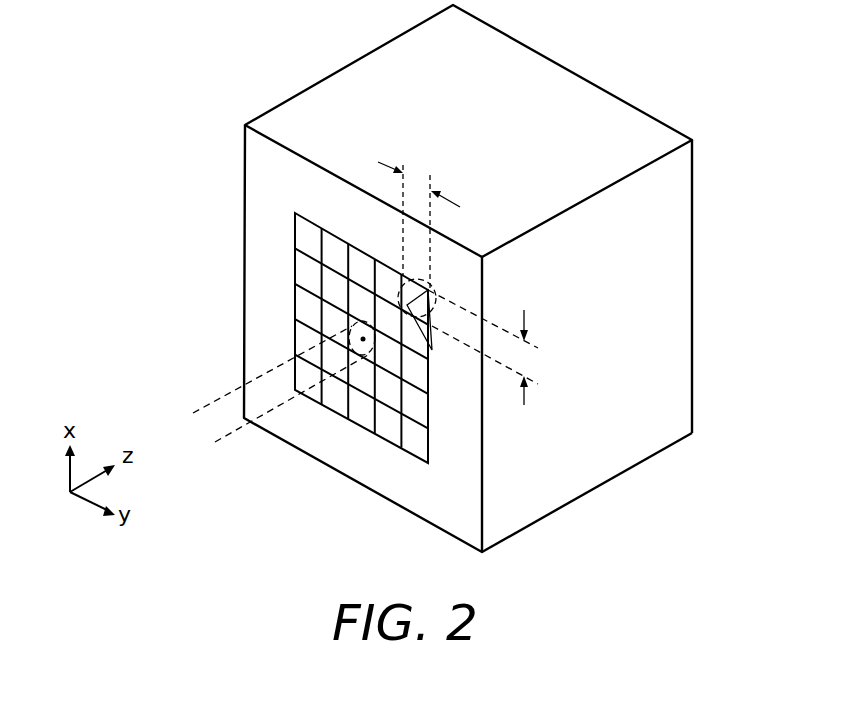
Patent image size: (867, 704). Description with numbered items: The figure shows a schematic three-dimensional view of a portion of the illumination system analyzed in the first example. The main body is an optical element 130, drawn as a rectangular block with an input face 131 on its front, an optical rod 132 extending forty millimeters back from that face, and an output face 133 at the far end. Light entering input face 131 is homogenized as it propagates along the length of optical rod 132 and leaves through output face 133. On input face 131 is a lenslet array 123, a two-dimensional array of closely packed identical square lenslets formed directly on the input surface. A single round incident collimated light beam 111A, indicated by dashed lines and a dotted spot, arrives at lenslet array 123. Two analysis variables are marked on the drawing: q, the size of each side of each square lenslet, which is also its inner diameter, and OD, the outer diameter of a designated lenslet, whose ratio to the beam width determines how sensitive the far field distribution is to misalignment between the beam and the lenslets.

The optical element 130 is at (352, 83).
The input face 131 is at (252, 176).
The optical rod 132 is at (613, 478).
The output face 133 is at (693, 240).
The lenslet array 123 is at (302, 238).
The incident collimated light beam 111A is at (235, 430).
The outer diameter of lenslet OD is at (432, 350).
The lenslet side size q is at (454, 283).